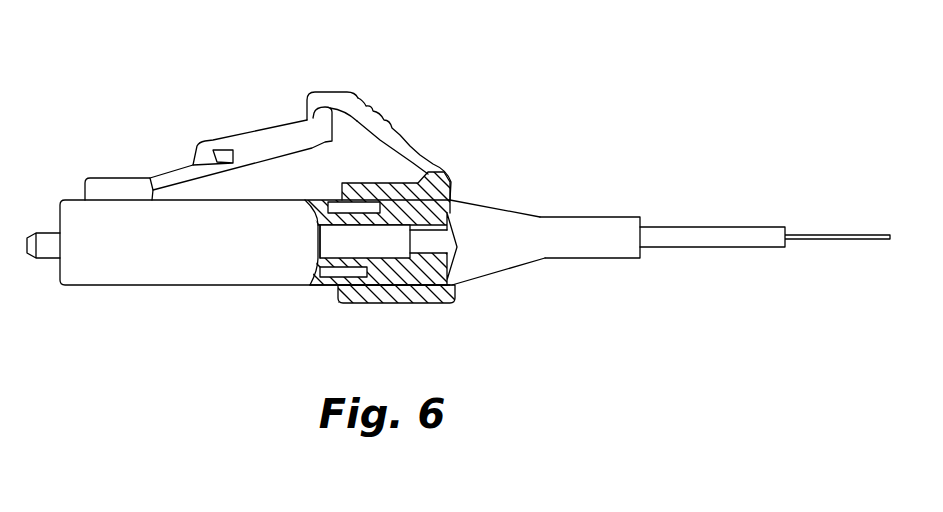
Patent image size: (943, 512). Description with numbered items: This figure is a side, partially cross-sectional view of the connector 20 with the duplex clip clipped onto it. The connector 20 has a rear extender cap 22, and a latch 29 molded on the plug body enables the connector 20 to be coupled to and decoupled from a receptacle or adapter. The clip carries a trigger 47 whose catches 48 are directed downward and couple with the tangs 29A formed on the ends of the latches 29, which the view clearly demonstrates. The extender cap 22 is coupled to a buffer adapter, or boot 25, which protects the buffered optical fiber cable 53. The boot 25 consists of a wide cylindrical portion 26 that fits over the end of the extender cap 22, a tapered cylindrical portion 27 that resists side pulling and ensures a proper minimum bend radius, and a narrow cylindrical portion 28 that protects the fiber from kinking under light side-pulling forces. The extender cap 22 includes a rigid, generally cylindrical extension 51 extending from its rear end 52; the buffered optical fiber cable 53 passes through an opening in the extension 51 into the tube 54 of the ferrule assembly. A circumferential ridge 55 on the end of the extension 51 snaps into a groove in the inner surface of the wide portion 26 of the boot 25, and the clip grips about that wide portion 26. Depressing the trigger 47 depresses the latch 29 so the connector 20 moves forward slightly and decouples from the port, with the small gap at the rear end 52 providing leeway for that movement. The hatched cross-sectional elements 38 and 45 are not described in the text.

The connector 20 is at (264, 191).
The rear extender cap 22 is at (298, 200).
The buffer adapter 25 is at (670, 231).
The wide cylindrical portion 26 is at (333, 280).
The tapered cylindrical portion 27 is at (493, 258).
The narrow cylindrical portion 28 is at (613, 249).
The latch 29 is at (258, 108).
The tang 29A is at (323, 113).
The latch arm 38 is at (343, 190).
The ferrule 45 is at (397, 282).
The trigger 47 is at (390, 122).
The catch 48 is at (313, 97).
The rigid extension 51 is at (333, 277).
The rear end 52 is at (330, 200).
The buffered optical fiber cable 53 is at (728, 236).
The tube 54 is at (328, 245).
The circumferential ridge 55 is at (392, 207).